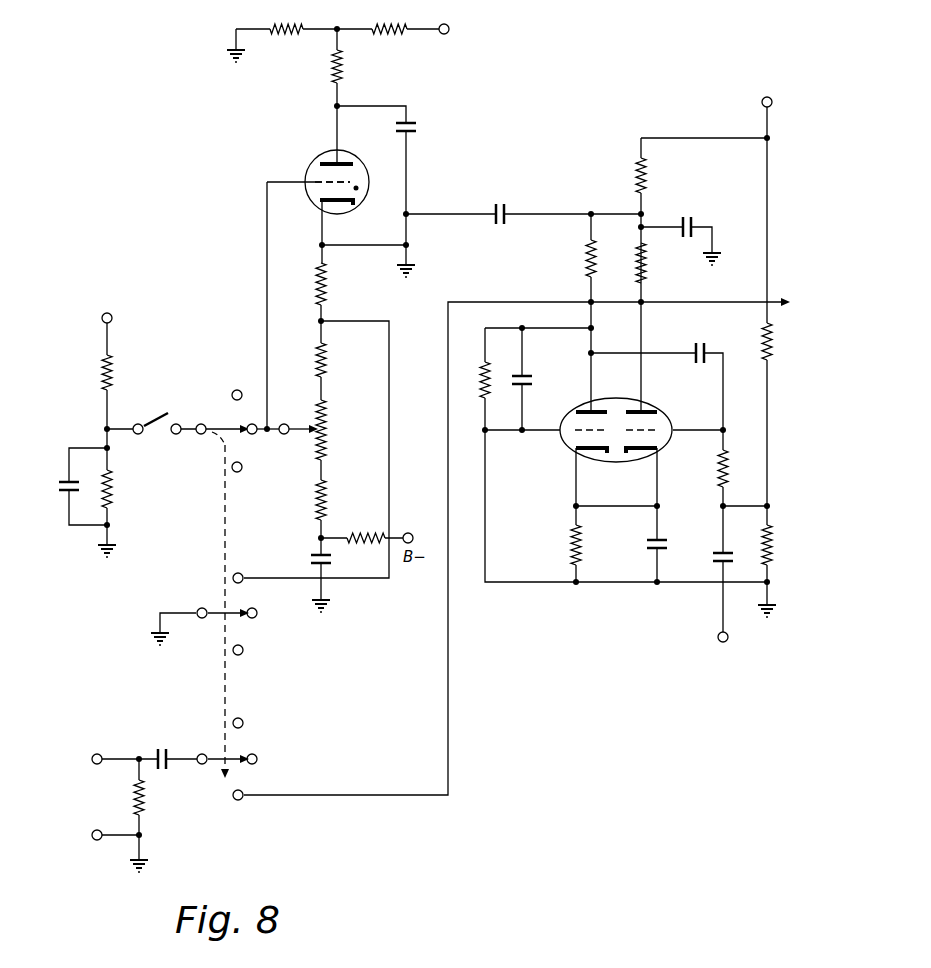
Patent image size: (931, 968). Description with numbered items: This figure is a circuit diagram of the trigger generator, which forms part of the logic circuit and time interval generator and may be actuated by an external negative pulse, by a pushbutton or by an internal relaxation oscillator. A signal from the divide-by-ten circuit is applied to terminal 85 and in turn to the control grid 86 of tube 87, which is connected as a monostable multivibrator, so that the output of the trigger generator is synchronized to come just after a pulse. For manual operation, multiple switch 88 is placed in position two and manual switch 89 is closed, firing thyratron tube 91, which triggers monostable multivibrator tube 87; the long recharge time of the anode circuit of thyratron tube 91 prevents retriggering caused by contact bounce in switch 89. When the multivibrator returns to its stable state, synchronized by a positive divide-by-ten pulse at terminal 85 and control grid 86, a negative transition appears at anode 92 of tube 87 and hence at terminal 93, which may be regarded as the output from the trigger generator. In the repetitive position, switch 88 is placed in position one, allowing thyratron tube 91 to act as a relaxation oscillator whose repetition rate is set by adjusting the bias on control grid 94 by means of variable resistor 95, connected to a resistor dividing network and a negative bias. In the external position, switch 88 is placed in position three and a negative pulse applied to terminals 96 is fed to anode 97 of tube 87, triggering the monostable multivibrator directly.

The terminal 85 is at (729, 640).
The control grid 86 is at (620, 421).
The tube 87 is at (566, 454).
The multiple switch 88 is at (218, 515).
The manual switch 89 is at (145, 413).
The thyratron tube 91 is at (327, 155).
The anode 92 is at (653, 403).
The terminal 93 is at (701, 306).
The control grid 94 is at (346, 174).
The variable resistor 95 is at (324, 440).
The terminals 96 is at (98, 767).
The anode 97 is at (588, 404).